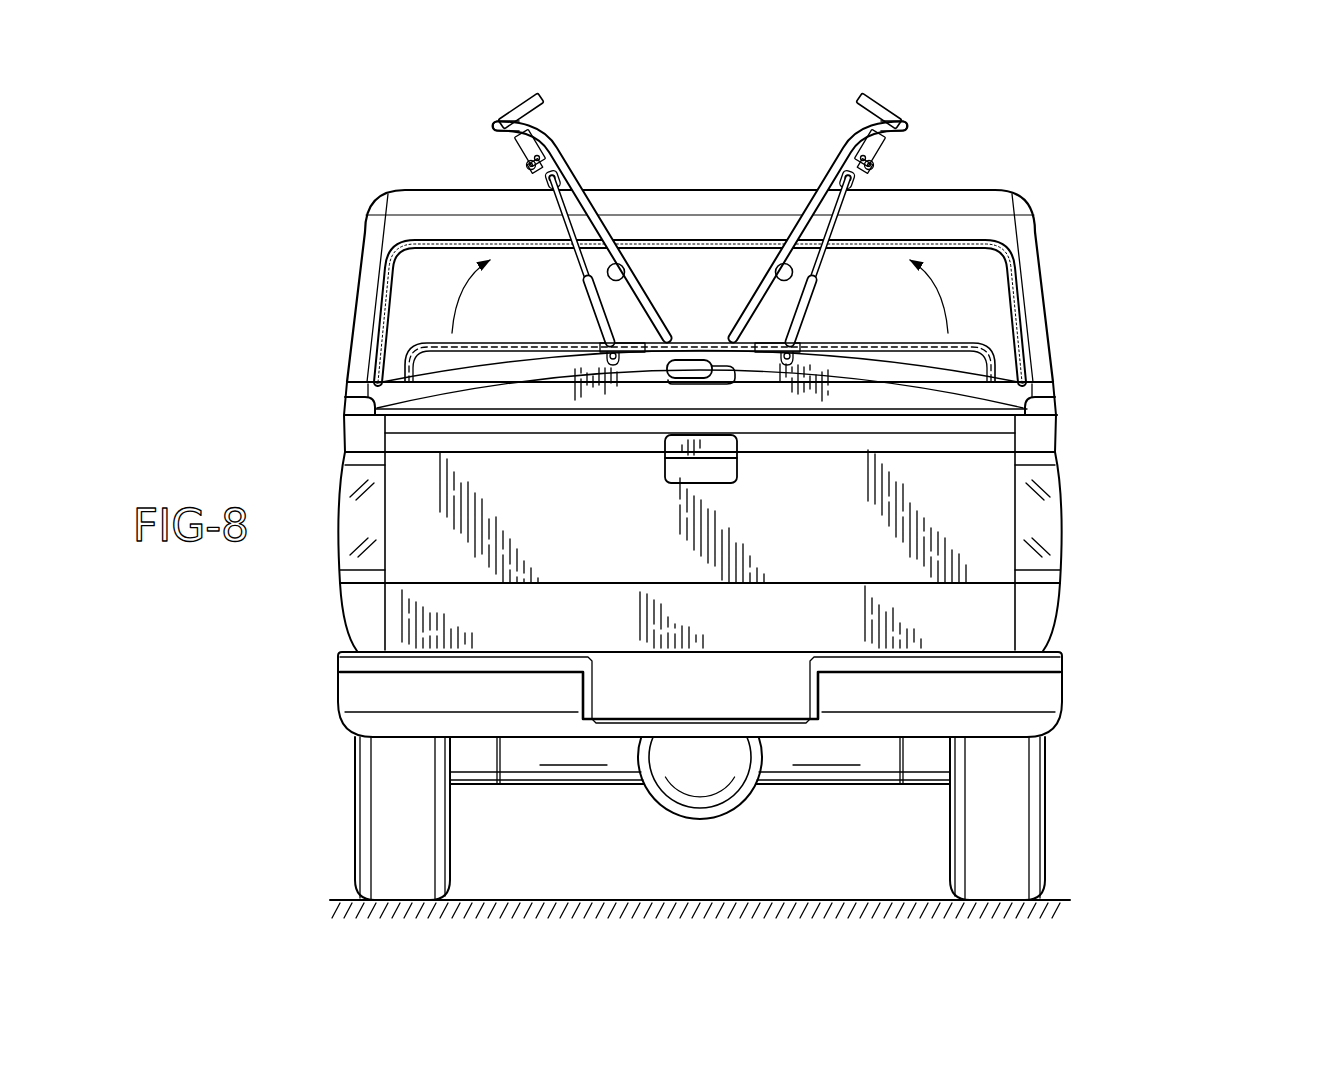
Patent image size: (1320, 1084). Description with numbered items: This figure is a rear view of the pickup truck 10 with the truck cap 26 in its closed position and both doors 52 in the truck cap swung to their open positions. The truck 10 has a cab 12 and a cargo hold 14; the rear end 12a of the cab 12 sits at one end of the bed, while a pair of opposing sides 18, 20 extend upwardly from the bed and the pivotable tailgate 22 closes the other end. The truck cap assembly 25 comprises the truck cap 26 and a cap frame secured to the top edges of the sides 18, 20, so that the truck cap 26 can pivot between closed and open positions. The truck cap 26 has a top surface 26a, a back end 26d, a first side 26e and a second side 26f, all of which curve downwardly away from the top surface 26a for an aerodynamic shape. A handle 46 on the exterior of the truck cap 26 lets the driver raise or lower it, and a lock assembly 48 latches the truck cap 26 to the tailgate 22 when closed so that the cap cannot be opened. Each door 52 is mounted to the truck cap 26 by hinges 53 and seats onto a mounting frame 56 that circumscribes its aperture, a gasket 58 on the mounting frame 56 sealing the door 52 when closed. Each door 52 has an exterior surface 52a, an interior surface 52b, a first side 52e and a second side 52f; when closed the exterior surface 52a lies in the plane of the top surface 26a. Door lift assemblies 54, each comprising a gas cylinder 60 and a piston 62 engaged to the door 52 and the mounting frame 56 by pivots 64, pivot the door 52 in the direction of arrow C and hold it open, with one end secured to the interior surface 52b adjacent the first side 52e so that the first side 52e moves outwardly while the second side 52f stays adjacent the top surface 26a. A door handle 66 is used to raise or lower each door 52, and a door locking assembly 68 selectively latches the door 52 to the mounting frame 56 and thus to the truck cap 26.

The pickup truck 10 is at (1158, 188).
The cab 12 is at (990, 190).
The rear end of cab 12a is at (1013, 245).
The cargo hold 14 is at (1050, 610).
The side 18 is at (347, 441).
The side 20 is at (1053, 441).
The tailgate 22 is at (987, 530).
The truck cap assembly 25 is at (426, 331).
The truck cap 26 is at (710, 372).
The top surface 26a is at (964, 334).
The back end 26d is at (852, 400).
The first side 26e is at (352, 384).
The second side 26f is at (1048, 384).
The handle 46 is at (669, 444).
The lock assembly 48 is at (668, 382).
The door 52 is at (564, 143).
The exterior surface 52a is at (558, 176).
The interior surface 52b is at (618, 263).
The first side 52e is at (498, 126).
The second side 52f is at (612, 342).
The hinge 53 is at (655, 302).
The door lift assembly 54 is at (547, 213).
The mounting frame 56 is at (701, 351).
The gasket 58 is at (410, 348).
The gas cylinder 60 is at (578, 261).
The piston 62 is at (588, 295).
The pivot 64 is at (534, 164).
The door handle 66 is at (503, 112).
The door locking assembly 68 is at (519, 153).